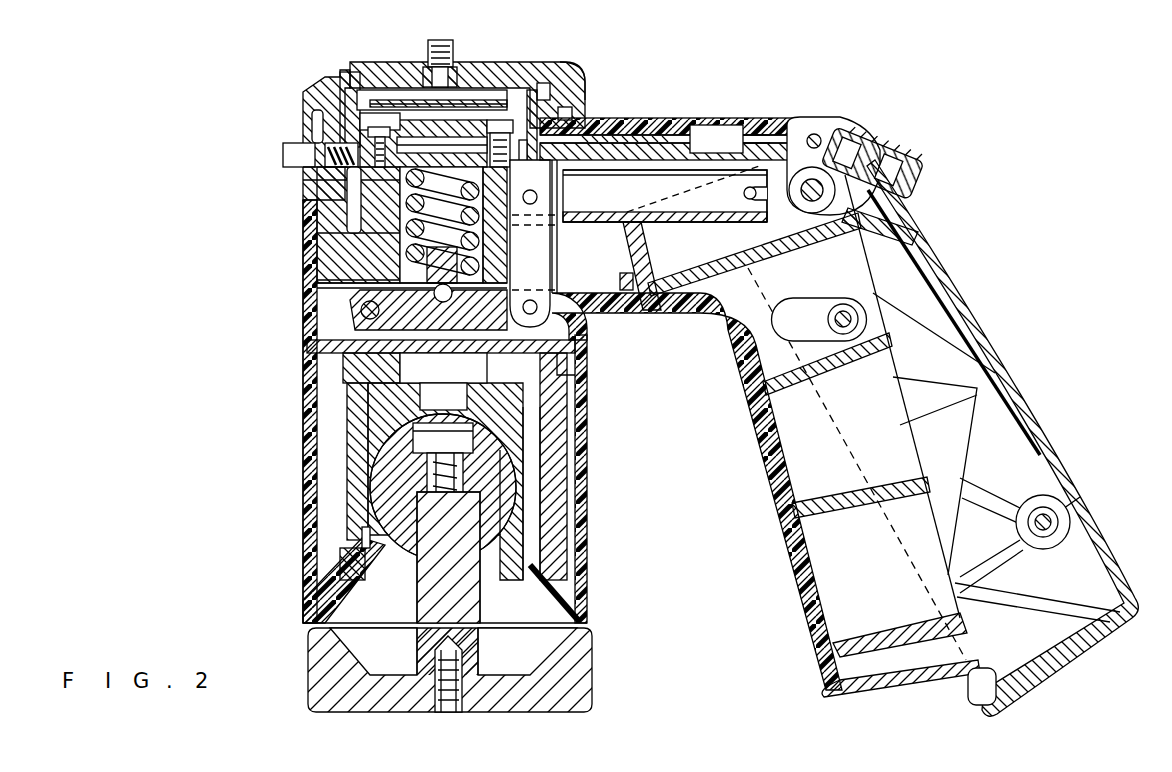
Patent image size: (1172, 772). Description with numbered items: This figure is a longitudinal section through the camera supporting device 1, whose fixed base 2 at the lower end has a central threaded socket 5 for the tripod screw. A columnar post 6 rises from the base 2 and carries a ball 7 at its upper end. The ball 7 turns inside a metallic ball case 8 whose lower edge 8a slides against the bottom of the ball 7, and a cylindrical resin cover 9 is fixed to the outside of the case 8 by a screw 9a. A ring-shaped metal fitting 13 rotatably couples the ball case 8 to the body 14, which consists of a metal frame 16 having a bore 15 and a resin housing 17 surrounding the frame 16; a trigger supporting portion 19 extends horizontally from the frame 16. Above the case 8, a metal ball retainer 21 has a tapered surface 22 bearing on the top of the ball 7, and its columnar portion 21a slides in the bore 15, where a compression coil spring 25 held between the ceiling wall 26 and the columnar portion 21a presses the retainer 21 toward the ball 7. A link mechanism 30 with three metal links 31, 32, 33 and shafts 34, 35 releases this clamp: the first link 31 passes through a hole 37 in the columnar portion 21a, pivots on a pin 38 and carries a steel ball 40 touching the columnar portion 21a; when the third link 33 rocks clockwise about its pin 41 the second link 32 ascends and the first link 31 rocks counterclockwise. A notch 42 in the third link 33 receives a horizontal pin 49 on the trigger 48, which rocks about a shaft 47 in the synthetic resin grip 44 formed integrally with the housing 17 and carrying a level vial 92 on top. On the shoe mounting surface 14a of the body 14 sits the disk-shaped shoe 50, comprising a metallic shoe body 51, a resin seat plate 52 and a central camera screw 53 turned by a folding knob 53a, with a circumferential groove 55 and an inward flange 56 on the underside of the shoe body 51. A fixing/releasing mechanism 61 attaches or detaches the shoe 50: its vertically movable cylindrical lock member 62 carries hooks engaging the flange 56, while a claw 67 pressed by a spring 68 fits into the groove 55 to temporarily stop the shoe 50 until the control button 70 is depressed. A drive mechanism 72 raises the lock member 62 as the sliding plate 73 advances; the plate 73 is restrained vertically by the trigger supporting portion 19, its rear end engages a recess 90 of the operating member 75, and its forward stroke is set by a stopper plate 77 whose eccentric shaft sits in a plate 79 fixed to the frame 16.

The camera supporting device 1 is at (965, 260).
The fixed base 2 is at (593, 663).
The threaded socket 5 is at (463, 672).
The columnar post 6 is at (480, 608).
The ball 7 is at (518, 503).
The ball case 8 is at (530, 487).
The edge 8a is at (493, 553).
The cylindrical resin cover 9 is at (588, 555).
The screw 9a is at (362, 556).
The ring-shaped metal fitting 13 is at (577, 383).
The body 14 is at (303, 347).
The shoe mounting surface 14a is at (580, 117).
The bore 15 is at (407, 243).
The metal frame 16 is at (330, 210).
The resin housing 17 is at (303, 205).
The trigger supporting portion 19 is at (790, 160).
The ball retainer 21 is at (507, 412).
The columnar portion 21a is at (580, 362).
The tapered surface 22 is at (493, 440).
The compression coil spring 25 is at (397, 262).
The ceiling wall 26 is at (310, 178).
The link mechanism 30 is at (713, 138).
The first link 31 is at (355, 347).
The second link 32 is at (548, 285).
The third link 33 is at (670, 197).
The shaft 34 is at (583, 333).
The shaft 35 is at (580, 203).
The hole 37 is at (403, 290).
The pin 38 is at (370, 323).
The steel ball 40 is at (452, 296).
The pin 41 is at (612, 205).
The notch 42 is at (742, 197).
The grip 44 is at (1007, 363).
The shaft 47 is at (872, 130).
The trigger 48 is at (793, 562).
The horizontal pin 49 is at (818, 138).
The shoe 50 is at (577, 62).
The shoe body 51 is at (583, 80).
The resin seat plate 52 is at (545, 66).
The camera screw 53 is at (452, 40).
The folding knob 53a is at (392, 100).
The circumferential groove 55 is at (333, 112).
The inward flange 56 is at (338, 112).
The fixing/releasing mechanism 61 is at (543, 82).
The cylindrical lock member 62 is at (362, 72).
The claw 67 is at (333, 137).
The spring 68 is at (325, 147).
The control button 70 is at (283, 152).
The drive mechanism 72 is at (677, 165).
The sliding plate 73 is at (640, 142).
The operating member 75 is at (925, 166).
The stopper plate 77 is at (470, 137).
The plate 79 is at (410, 117).
The recess 90 is at (835, 150).
The level vial 92 is at (747, 128).